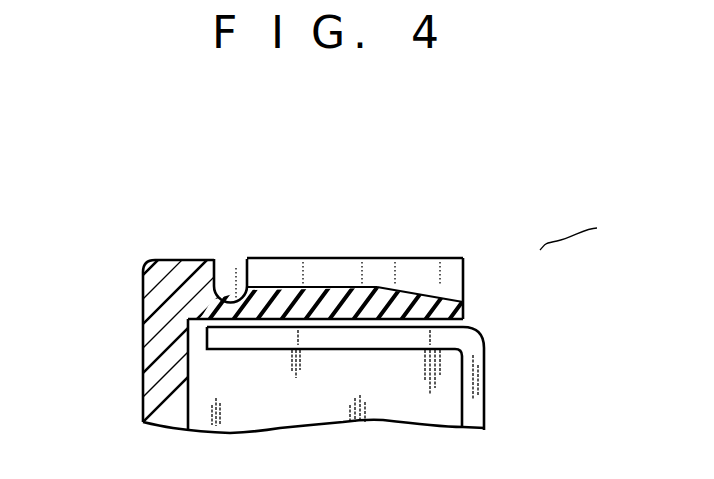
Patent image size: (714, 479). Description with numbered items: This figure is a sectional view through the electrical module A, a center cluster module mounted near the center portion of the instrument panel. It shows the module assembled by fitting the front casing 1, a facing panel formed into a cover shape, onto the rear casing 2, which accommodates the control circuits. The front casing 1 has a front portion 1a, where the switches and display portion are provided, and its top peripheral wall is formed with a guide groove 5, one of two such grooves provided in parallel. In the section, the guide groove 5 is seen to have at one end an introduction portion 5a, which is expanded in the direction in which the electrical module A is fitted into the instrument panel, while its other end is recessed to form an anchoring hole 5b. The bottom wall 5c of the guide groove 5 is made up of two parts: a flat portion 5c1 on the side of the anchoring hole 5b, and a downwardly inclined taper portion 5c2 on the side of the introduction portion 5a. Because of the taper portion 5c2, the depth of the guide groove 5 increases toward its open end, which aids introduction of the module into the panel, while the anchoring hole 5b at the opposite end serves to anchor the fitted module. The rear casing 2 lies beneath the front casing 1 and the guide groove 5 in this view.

The front casing 1 is at (142, 282).
The front portion 1a is at (200, 258).
The rear casing 2 is at (487, 337).
The guide groove 5 is at (272, 271).
The introduction portion 5a is at (448, 259).
The anchoring hole 5b is at (236, 282).
The bottom wall 5c is at (341, 224).
The flat portion 5c1 is at (325, 287).
The taper portion 5c2 is at (416, 297).
The electrical module A is at (585, 226).